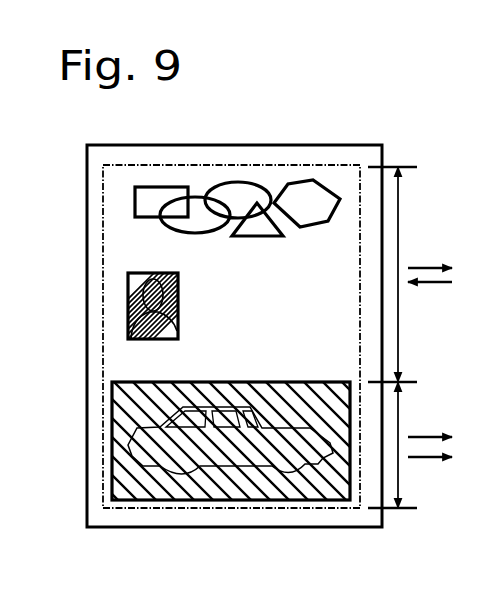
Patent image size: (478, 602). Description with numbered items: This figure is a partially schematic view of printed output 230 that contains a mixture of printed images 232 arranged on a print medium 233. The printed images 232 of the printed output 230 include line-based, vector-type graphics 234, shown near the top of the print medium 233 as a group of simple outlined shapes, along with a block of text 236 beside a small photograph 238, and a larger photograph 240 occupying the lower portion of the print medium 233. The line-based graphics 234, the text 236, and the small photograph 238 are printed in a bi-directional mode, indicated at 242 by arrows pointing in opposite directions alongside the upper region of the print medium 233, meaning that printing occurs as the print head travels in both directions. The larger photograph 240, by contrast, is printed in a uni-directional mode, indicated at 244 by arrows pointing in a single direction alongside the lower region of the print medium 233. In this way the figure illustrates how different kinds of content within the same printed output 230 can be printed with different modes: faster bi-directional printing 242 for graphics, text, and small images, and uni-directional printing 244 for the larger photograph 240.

The printed output 230 is at (72, 203).
The printed images 232 is at (228, 267).
The print medium 233 is at (95, 502).
The line-based graphics 234 is at (238, 183).
The text 236 is at (330, 255).
The small photograph 238 is at (145, 340).
The larger photograph 240 is at (253, 502).
The bi-directional mode 242 is at (432, 243).
The uni-directional mode 244 is at (432, 420).